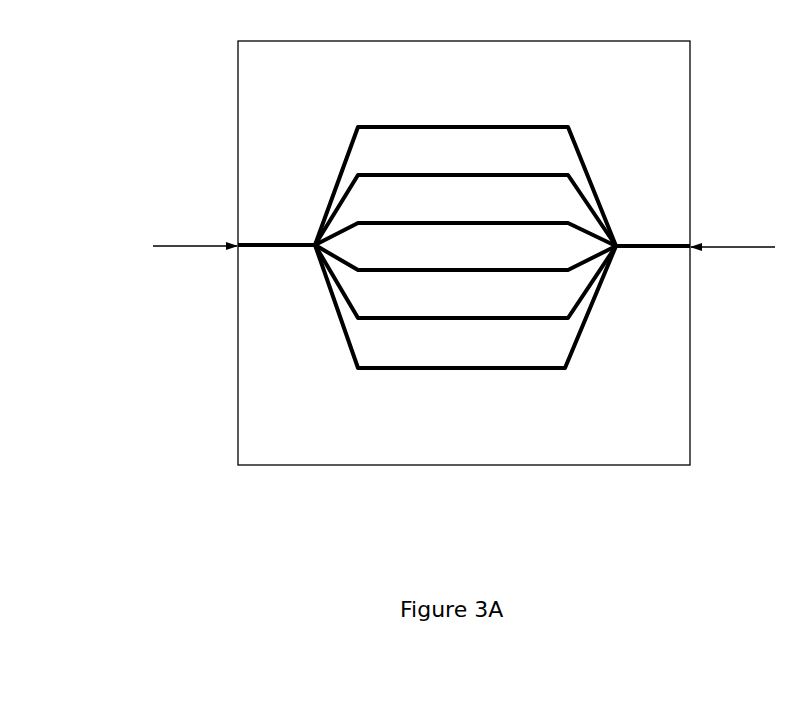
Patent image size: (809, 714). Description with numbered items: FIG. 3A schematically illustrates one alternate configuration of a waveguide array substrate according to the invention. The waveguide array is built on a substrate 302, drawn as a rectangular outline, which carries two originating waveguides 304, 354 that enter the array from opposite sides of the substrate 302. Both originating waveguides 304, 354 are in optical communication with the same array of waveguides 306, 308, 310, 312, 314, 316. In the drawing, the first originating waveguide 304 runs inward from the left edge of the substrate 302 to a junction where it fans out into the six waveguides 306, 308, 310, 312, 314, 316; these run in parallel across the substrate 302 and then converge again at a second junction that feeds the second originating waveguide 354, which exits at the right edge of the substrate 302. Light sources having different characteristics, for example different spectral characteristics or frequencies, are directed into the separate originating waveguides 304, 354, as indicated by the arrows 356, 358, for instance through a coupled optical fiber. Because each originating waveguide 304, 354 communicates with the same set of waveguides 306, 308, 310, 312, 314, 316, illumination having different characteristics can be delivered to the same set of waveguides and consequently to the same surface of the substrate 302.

The substrate 302 is at (655, 445).
The originating waveguide 304 is at (241, 240).
The waveguide 306 is at (465, 168).
The waveguide 308 is at (465, 193).
The waveguide 310 is at (465, 217).
The waveguide 312 is at (465, 254).
The waveguide 314 is at (465, 281).
The waveguide 316 is at (465, 306).
The originating waveguide 354 is at (671, 244).
The arrow 356 is at (187, 248).
The arrow 358 is at (723, 252).